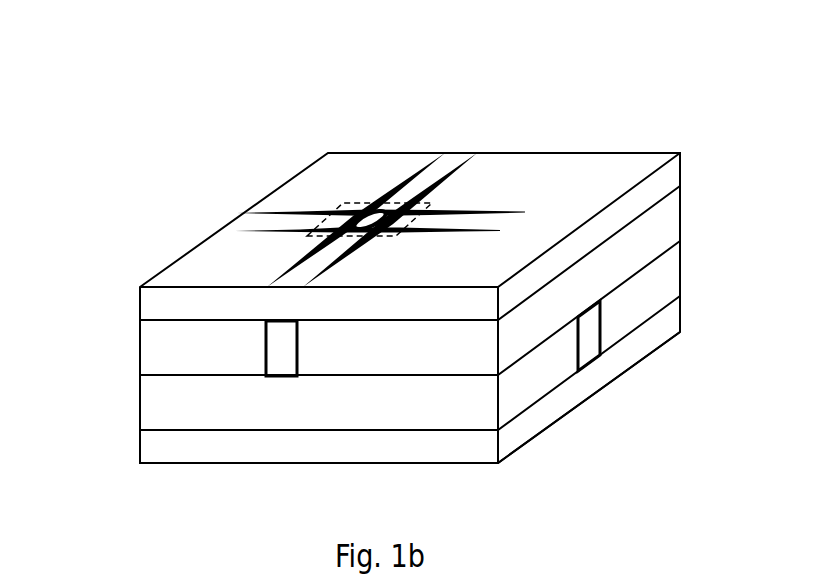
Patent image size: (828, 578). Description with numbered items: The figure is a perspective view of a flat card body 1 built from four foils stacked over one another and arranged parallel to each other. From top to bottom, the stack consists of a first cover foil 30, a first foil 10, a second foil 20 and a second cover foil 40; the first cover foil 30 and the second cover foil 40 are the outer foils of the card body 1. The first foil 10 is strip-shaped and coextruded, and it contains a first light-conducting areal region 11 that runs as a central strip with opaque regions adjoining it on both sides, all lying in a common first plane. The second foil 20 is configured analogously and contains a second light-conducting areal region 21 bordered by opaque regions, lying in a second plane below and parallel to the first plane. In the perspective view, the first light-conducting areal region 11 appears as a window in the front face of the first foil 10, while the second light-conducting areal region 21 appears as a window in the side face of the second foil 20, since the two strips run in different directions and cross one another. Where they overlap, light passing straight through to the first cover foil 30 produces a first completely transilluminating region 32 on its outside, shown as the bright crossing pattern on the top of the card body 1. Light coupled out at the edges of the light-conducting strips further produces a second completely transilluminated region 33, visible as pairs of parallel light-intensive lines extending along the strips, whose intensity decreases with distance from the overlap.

The card body 1 is at (198, 148).
The first foil 10 is at (361, 386).
The first light-conducting areal region 11 is at (282, 370).
The second foil 20 is at (361, 366).
The second light-conducting areal region 21 is at (596, 352).
The first cover foil 30 is at (410, 190).
The first completely transilluminating region 32 is at (398, 198).
The second completely transilluminated region 33 is at (455, 207).
The second cover foil 40 is at (140, 450).